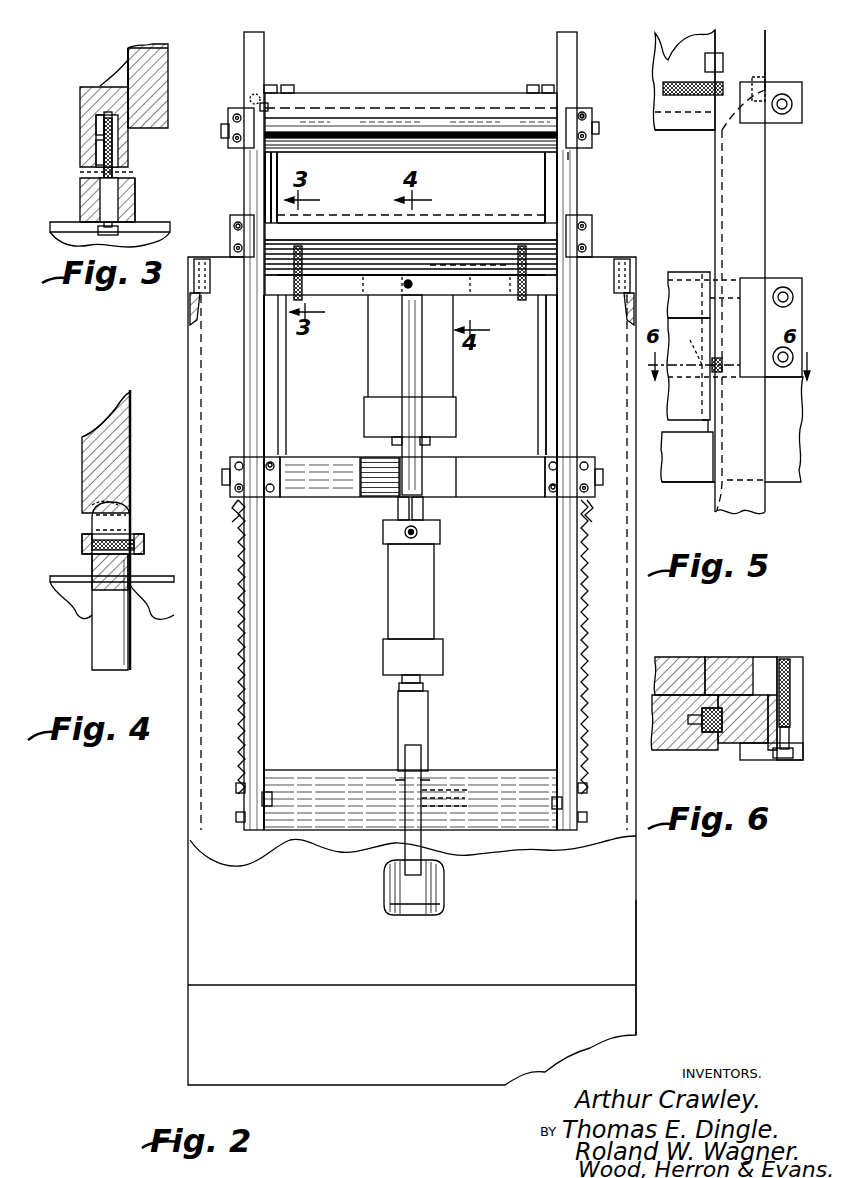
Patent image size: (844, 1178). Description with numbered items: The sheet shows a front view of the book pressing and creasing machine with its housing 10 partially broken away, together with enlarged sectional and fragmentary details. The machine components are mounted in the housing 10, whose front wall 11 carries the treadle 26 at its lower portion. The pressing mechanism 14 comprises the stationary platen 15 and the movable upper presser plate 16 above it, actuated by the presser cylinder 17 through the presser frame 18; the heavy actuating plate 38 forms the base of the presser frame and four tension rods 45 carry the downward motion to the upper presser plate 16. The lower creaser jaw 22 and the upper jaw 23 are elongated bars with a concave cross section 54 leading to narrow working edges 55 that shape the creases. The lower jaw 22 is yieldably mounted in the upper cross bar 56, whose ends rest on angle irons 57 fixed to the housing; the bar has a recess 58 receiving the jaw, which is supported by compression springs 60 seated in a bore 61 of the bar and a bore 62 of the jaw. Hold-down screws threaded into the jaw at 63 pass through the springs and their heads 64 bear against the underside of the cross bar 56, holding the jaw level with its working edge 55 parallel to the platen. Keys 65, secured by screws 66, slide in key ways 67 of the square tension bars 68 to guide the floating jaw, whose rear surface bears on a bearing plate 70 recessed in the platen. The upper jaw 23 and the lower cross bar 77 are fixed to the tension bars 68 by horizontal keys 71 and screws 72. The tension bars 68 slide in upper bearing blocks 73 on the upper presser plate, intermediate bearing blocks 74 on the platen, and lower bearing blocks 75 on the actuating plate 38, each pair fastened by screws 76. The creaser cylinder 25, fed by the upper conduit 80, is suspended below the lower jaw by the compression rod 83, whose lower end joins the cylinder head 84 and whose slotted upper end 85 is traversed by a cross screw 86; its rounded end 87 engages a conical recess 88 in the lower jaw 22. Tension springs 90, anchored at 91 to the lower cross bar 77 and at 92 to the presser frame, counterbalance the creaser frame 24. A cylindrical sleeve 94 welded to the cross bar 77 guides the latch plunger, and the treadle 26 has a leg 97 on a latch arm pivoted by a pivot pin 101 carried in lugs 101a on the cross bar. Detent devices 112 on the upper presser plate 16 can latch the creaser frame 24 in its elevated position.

In FIG. 2, the housing 10 is at (185, 790).
In FIG. 2, the front wall 11 is at (636, 910).
In FIG. 2, the pressing mechanism 14 is at (385, 96).
In FIG. 2, the platen 15 is at (472, 222).
In FIG. 3, the platen 15 is at (162, 72).
In FIG. 6, the platen 15 is at (744, 662).
In FIG. 2, the upper presser plate 16 is at (420, 114).
In FIG. 2, the presser cylinder 17 is at (450, 376).
In FIG. 2, the presser frame 18 is at (542, 407).
In FIG. 2, the lower creaser jaw 22 is at (505, 240).
In FIG. 3, the lower creaser jaw 22 is at (82, 98).
In FIG. 4, the lower creaser jaw 22 is at (84, 456).
In FIG. 5, the lower creaser jaw 22 is at (682, 290).
In FIG. 6, the lower creaser jaw 22 is at (668, 755).
In FIG. 2, the upper jaw 23 is at (487, 115).
In FIG. 5, the upper jaw 23 is at (670, 82).
In FIG. 2, the creaser frame 24 is at (262, 413).
In FIG. 5, the creaser frame 24 is at (770, 212).
In FIG. 2, the creaser cylinder 25 is at (434, 594).
In FIG. 2, the treadle 26 is at (445, 890).
In FIG. 2, the actuating plate 38 is at (310, 492).
In FIG. 2, the tension rods 45 is at (280, 378).
In FIG. 2, the concave cross section 54 is at (350, 217).
In FIG. 3, the concave cross section 54 is at (106, 84).
In FIG. 4, the concave cross section 54 is at (102, 426).
In FIG. 2, the working edges 55 is at (452, 218).
In FIG. 3, the working edges 55 is at (128, 46).
In FIG. 4, the working edges 55 is at (130, 390).
In FIG. 5, the working edges 55 is at (678, 130).
In FIG. 2, the upper cross bar 56 is at (345, 285).
In FIG. 3, the upper cross bar 56 is at (130, 210).
In FIG. 4, the upper cross bar 56 is at (134, 540).
In FIG. 5, the upper cross bar 56 is at (676, 482).
In FIG. 2, the angle irons 57 is at (197, 310).
In FIG. 3, the angle irons 57 is at (145, 240).
In FIG. 4, the angle irons 57 is at (144, 600).
In FIG. 2, the recess 58 is at (479, 285).
In FIG. 3, the recess 58 is at (90, 172).
In FIG. 5, the recess 58 is at (682, 415).
In FIG. 2, the compression springs 60 is at (302, 270).
In FIG. 3, the compression springs 60 is at (114, 170).
In FIG. 3, the bore 61 is at (125, 200).
In FIG. 3, the bore 62 is at (98, 142).
In FIG. 3, the threaded upper end of hold-down screw 63 is at (114, 146).
In FIG. 2, the screw heads 64 is at (521, 295).
In FIG. 3, the screw heads 64 is at (100, 236).
In FIG. 5, the keys 65 is at (718, 358).
In FIG. 6, the keys 65 is at (712, 680).
In FIG. 5, the screws 66 is at (688, 375).
In FIG. 6, the screws 66 is at (693, 678).
In FIG. 5, the key ways 67 is at (722, 212).
In FIG. 6, the key ways 67 is at (728, 740).
In FIG. 2, the tension bars 68 is at (578, 55).
In FIG. 5, the tension bars 68 is at (752, 455).
In FIG. 6, the tension bars 68 is at (762, 675).
In FIG. 3, the bearing plate 70 is at (156, 58).
In FIG. 2, the horizontal keys 71 is at (255, 94).
In FIG. 5, the horizontal keys 71 is at (722, 55).
In FIG. 2, the horizontal screws 72 is at (569, 152).
In FIG. 5, the horizontal screws 72 is at (765, 50).
In FIG. 2, the upper bearing blocks 73 is at (235, 110).
In FIG. 5, the upper bearing blocks 73 is at (785, 88).
In FIG. 2, the intermediate bearing blocks 74 is at (232, 228).
In FIG. 5, the intermediate bearing blocks 74 is at (750, 282).
In FIG. 6, the intermediate bearing blocks 74 is at (765, 760).
In FIG. 2, the lower bearing blocks 75 is at (250, 468).
In FIG. 2, the screws 76 is at (583, 112).
In FIG. 5, the screws 76 is at (784, 112).
In FIG. 6, the screws 76 is at (792, 660).
In FIG. 2, the lower cross bar 77 is at (290, 792).
In FIG. 2, the upper conduit 80 is at (420, 534).
In FIG. 2, the compression rod 83 is at (406, 370).
In FIG. 4, the compression rod 83 is at (100, 655).
In FIG. 2, the head of creaser cylinder 84 is at (383, 532).
In FIG. 4, the slot 85 is at (100, 575).
In FIG. 2, the screw 86 is at (407, 288).
In FIG. 4, the screw 86 is at (88, 545).
In FIG. 4, the rounded end 87 is at (124, 504).
In FIG. 4, the conical recess 88 is at (92, 496).
In FIG. 2, the tension springs 90 is at (237, 665).
In FIG. 2, the lower spring anchor 91 is at (240, 787).
In FIG. 2, the upper spring anchor 92 is at (240, 490).
In FIG. 2, the cylindrical sleeve 94 is at (430, 722).
In FIG. 2, the leg 97 is at (425, 782).
In FIG. 2, the pivot pin 101 is at (440, 795).
In FIG. 2, the lugs 101a is at (379, 811).
In FIG. 2, the detent devices 112 is at (294, 94).